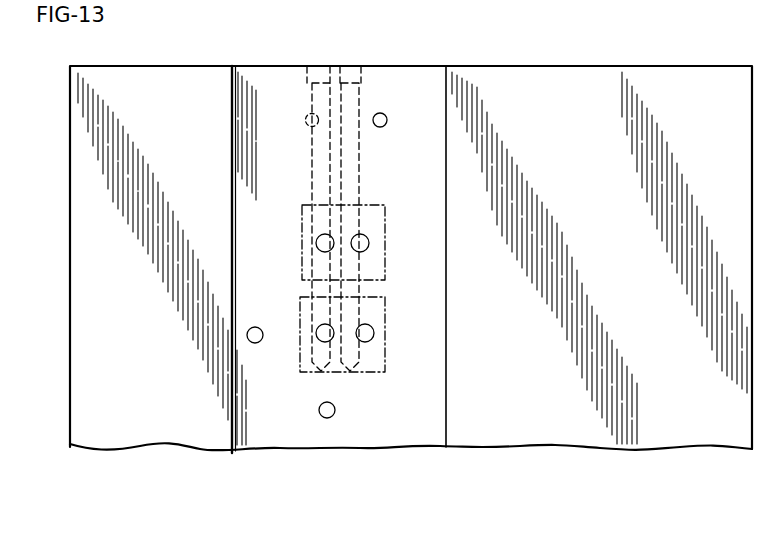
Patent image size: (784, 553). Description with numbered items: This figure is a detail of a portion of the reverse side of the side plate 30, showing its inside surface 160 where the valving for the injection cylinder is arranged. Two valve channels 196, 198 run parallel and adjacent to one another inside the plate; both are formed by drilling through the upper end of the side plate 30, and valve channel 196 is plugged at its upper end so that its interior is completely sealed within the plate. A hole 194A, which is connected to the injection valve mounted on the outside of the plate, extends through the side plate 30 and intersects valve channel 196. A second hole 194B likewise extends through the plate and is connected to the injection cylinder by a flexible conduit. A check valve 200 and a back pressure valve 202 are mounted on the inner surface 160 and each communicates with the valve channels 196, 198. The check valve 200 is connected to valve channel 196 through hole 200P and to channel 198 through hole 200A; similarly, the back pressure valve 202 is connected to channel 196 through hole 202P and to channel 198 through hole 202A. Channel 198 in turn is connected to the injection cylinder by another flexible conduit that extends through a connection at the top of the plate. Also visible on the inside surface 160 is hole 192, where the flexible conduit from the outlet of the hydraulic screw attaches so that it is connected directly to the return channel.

The side plate 30 is at (683, 438).
The inside surface 160 is at (630, 262).
The hole 192 is at (333, 407).
The hole 194A is at (305, 118).
The hole 194B is at (385, 115).
The valve channel 196 is at (310, 96).
The valve channel 198 is at (357, 94).
The check valve 200 is at (365, 297).
The hole 200A is at (373, 333).
The hole 200P is at (320, 338).
The back pressure valve 202 is at (385, 230).
The hole 202A is at (358, 244).
The hole 202P is at (328, 243).